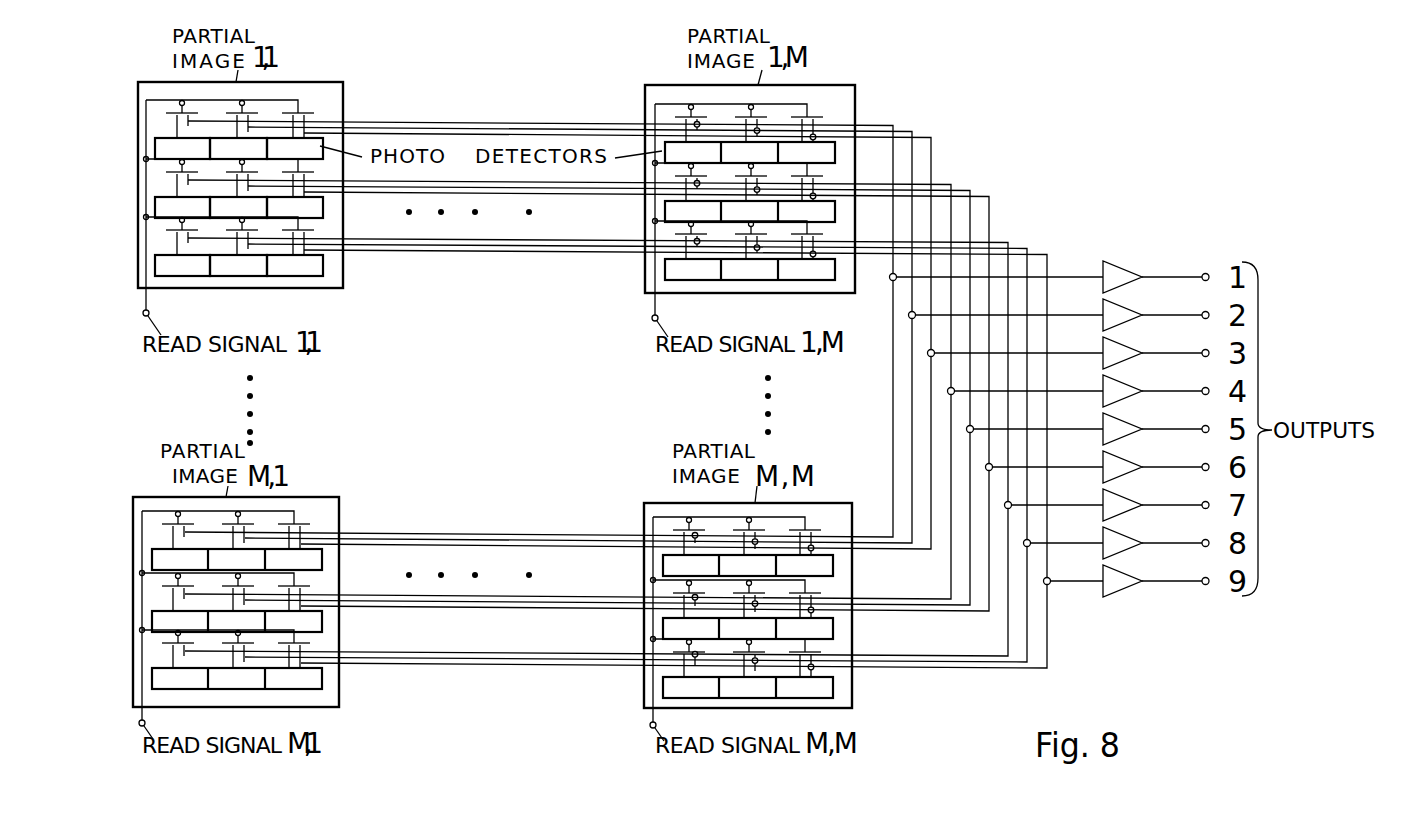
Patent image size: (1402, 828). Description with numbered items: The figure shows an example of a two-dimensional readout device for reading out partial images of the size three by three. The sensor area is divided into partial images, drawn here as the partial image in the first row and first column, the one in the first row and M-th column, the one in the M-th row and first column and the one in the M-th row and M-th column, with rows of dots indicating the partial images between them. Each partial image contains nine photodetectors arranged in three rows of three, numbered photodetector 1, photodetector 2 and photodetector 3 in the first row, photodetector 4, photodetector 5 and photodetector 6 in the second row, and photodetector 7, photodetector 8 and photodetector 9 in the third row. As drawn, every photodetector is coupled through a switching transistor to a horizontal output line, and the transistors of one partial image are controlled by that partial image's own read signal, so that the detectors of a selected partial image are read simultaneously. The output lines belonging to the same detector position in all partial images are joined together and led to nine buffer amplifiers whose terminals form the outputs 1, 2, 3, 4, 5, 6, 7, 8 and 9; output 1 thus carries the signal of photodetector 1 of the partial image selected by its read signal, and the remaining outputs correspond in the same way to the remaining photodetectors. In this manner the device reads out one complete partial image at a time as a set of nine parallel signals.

The photodetector 1 is at (182, 148).
The photodetector 2 is at (238, 148).
The photodetector 3 is at (295, 148).
The photodetector 4 is at (182, 207).
The photodetector 5 is at (238, 207).
The photodetector 6 is at (295, 207).
The photodetector 7 is at (182, 265).
The photodetector 8 is at (238, 265).
The photodetector 9 is at (295, 265).